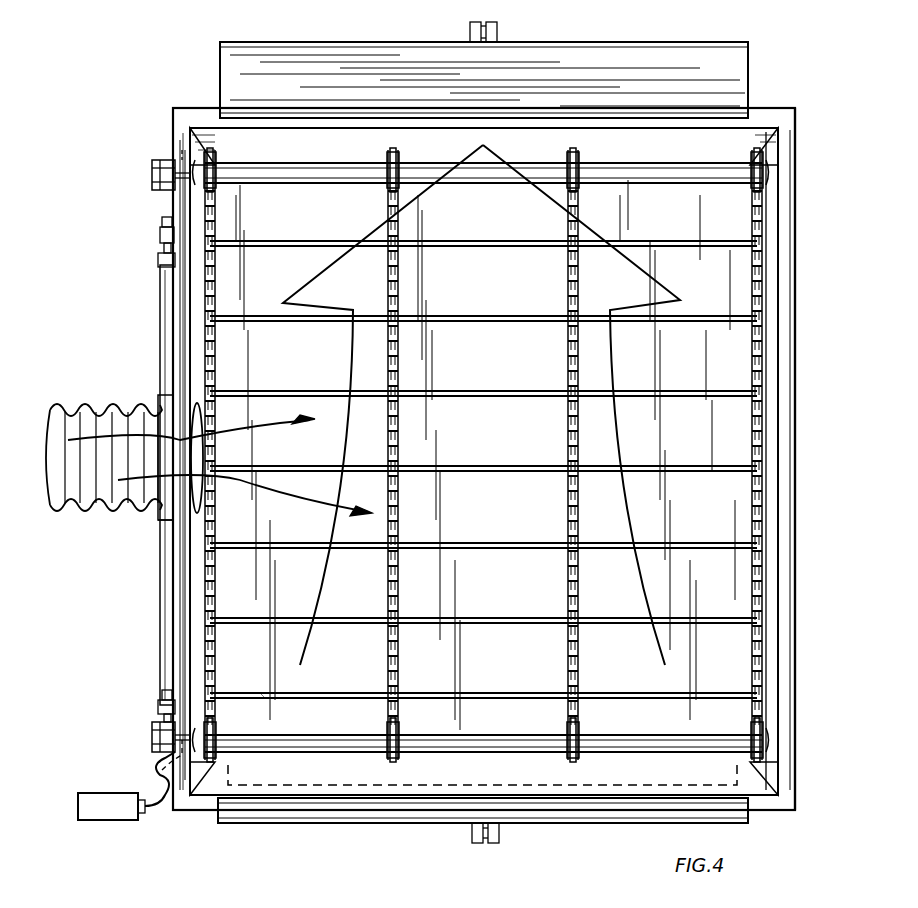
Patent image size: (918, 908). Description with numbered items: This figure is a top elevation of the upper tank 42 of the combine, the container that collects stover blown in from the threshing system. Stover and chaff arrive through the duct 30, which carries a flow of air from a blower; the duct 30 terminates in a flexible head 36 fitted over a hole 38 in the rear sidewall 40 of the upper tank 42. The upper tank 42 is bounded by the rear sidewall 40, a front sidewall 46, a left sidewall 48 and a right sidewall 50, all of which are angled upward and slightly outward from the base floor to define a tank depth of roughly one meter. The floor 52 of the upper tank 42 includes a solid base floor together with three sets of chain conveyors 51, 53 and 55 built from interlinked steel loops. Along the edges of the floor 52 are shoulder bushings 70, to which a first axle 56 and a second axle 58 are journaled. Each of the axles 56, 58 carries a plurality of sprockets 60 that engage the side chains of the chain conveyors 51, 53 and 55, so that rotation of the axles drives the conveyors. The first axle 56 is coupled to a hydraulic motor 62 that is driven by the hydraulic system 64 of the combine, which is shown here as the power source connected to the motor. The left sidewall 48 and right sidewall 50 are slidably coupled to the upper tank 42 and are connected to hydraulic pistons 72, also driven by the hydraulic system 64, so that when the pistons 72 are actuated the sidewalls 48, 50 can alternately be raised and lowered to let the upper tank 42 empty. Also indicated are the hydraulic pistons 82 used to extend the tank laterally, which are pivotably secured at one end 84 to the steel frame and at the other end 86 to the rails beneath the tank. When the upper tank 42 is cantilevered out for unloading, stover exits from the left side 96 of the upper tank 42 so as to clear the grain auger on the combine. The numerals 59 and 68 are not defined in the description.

The duct 30 is at (96, 429).
The flexible head 36 is at (125, 400).
The hole 38 is at (225, 490).
The rear sidewall 40 is at (175, 570).
The upper tank 42 is at (176, 300).
The front sidewall 46 is at (770, 420).
The left sidewall 48 is at (230, 80).
The right sidewall 50 is at (460, 808).
The chain conveyor 51 is at (665, 695).
The floor 52 is at (725, 660).
The chain conveyor 53 is at (458, 692).
The chain conveyor 55 is at (268, 693).
The first axle 56 is at (185, 150).
The second axle 58 is at (162, 770).
The drive chain 59 is at (758, 437).
The sprockets 60 is at (580, 750).
The hydraulic motor 62 is at (165, 165).
The hydraulic system 64 is at (108, 800).
The lower bolt 68 is at (158, 738).
The shoulder bushings 70 is at (205, 760).
The hydraulic pistons 72 is at (472, 25).
The hydraulic pistons 82 is at (166, 325).
The one end 84 is at (160, 700).
The other end 86 is at (160, 235).
The left side 96 is at (200, 128).